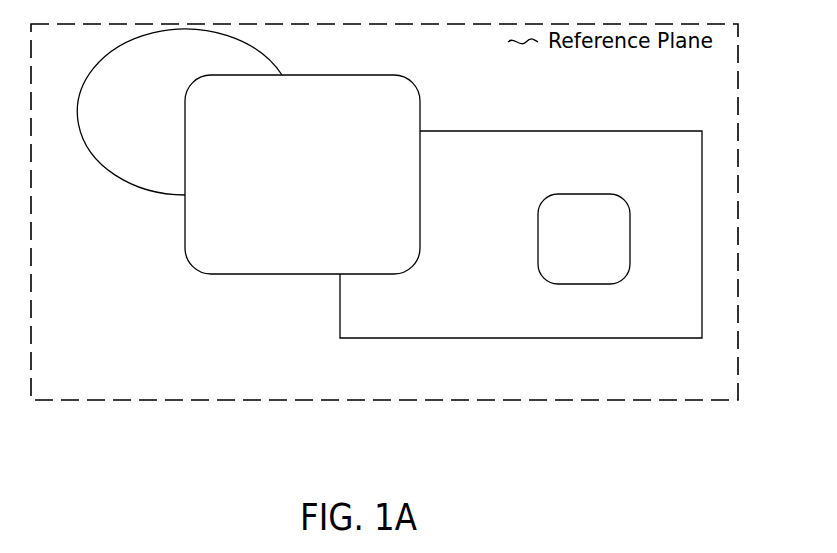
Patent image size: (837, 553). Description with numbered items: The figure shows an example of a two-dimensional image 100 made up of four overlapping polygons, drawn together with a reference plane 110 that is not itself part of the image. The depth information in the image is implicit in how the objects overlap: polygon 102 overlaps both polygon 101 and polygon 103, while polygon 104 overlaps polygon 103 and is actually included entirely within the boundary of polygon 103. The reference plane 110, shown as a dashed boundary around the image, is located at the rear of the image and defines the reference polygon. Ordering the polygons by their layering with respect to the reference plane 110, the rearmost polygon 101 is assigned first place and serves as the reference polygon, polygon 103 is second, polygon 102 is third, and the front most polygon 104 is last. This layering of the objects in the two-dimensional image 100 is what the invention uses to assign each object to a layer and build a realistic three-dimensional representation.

The two-dimensional image 100 is at (60, 418).
The polygon 101 is at (123, 183).
The polygon 102 is at (250, 275).
The polygon 103 is at (490, 340).
The polygon 104 is at (588, 194).
The reference plane 110 is at (739, 72).